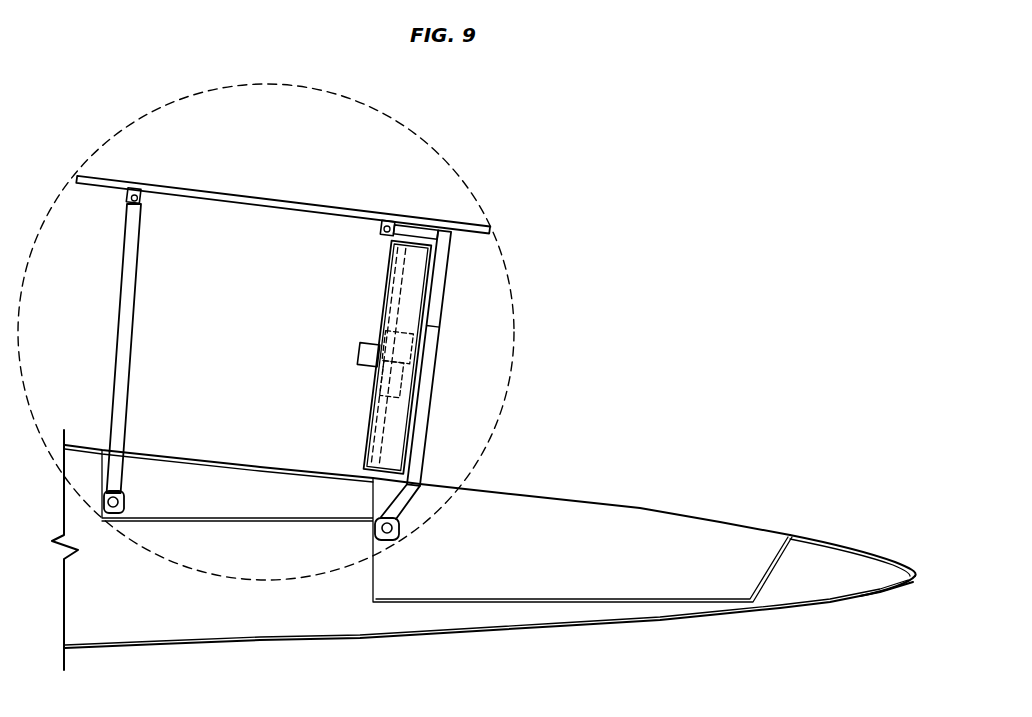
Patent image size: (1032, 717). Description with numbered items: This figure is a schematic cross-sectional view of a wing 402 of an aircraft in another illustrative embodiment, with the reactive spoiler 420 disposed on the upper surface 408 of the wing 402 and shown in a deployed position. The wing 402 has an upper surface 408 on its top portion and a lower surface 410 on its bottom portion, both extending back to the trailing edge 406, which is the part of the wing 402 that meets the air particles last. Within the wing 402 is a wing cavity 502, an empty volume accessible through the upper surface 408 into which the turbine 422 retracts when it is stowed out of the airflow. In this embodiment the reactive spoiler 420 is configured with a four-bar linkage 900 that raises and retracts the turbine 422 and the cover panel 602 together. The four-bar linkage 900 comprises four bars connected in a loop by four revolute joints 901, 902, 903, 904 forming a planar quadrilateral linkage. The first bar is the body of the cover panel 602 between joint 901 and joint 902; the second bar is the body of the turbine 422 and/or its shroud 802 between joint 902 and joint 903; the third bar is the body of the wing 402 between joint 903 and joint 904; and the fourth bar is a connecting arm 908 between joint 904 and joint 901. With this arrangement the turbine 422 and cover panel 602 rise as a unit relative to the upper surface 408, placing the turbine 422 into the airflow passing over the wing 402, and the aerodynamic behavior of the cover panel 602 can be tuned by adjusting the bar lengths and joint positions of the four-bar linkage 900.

The four-bar linkage 900 is at (449, 160).
The reactive spoiler 420 is at (640, 212).
The wing 402 is at (162, 640).
The lower surface 410 is at (395, 640).
The wing cavity 502 is at (601, 526).
The upper surface 408 is at (847, 540).
The trailing edge 406 is at (918, 576).
The cover panel 602 is at (317, 204).
The joint 901 is at (127, 195).
The connecting arm 908 is at (118, 331).
The joint 904 is at (125, 500).
The joint 902 is at (380, 230).
The turbine 422 is at (456, 338).
The joint 903 is at (399, 531).
The shroud 802 is at (368, 430).